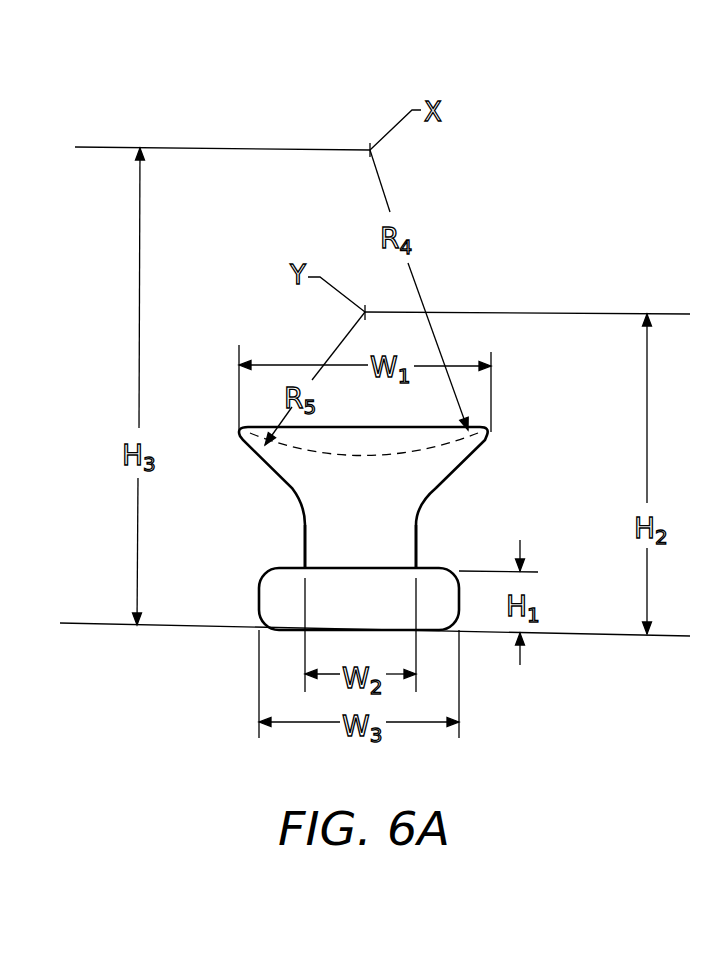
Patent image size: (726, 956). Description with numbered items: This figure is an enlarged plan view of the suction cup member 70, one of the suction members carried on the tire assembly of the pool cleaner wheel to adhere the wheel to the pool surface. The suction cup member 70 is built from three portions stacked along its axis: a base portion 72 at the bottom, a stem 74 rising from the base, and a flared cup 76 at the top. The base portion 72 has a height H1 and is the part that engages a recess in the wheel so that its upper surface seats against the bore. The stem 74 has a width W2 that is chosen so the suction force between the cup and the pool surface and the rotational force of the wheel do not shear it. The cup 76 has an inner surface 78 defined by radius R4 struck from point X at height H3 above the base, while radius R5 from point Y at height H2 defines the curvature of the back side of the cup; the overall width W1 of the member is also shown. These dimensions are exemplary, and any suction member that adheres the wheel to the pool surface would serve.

The suction cup member 70 is at (403, 507).
The base portion 72 is at (342, 577).
The stem 74 is at (398, 531).
The cup 76 is at (387, 497).
The inner surface 78 is at (364, 426).